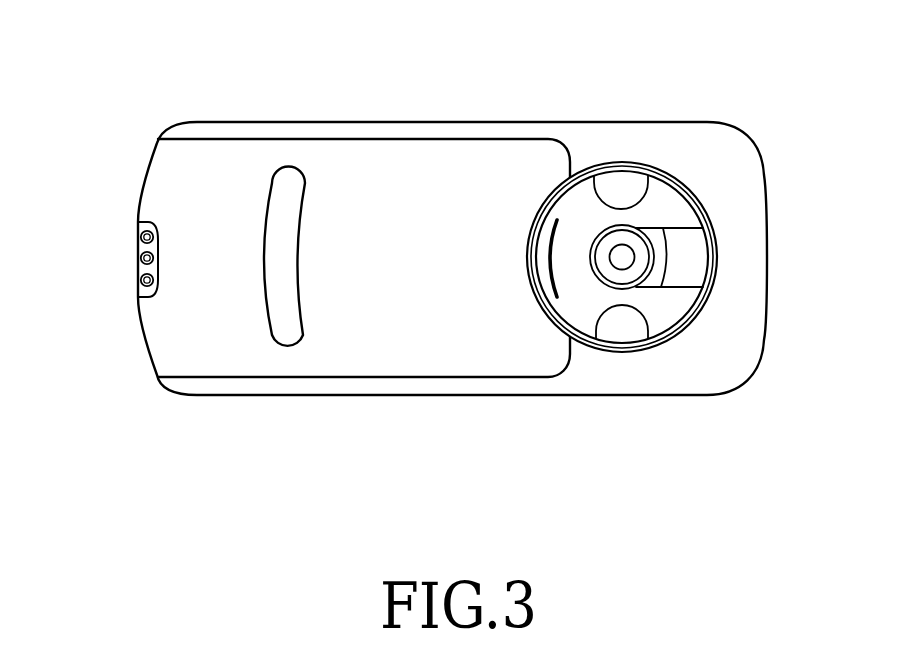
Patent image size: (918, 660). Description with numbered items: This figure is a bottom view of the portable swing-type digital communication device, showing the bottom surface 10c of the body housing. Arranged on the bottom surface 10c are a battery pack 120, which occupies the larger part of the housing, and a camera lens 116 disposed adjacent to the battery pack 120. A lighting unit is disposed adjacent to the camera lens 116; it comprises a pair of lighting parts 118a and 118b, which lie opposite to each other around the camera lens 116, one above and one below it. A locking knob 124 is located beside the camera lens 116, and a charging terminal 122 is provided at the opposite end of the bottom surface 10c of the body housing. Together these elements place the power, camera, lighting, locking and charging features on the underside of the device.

The bottom surface 10c is at (705, 147).
The battery pack 120 is at (395, 155).
The charging terminal 122 is at (137, 259).
The camera lens 116 is at (622, 257).
The lighting part 118a is at (617, 183).
The lighting part 118b is at (623, 327).
The locking knob 124 is at (545, 270).